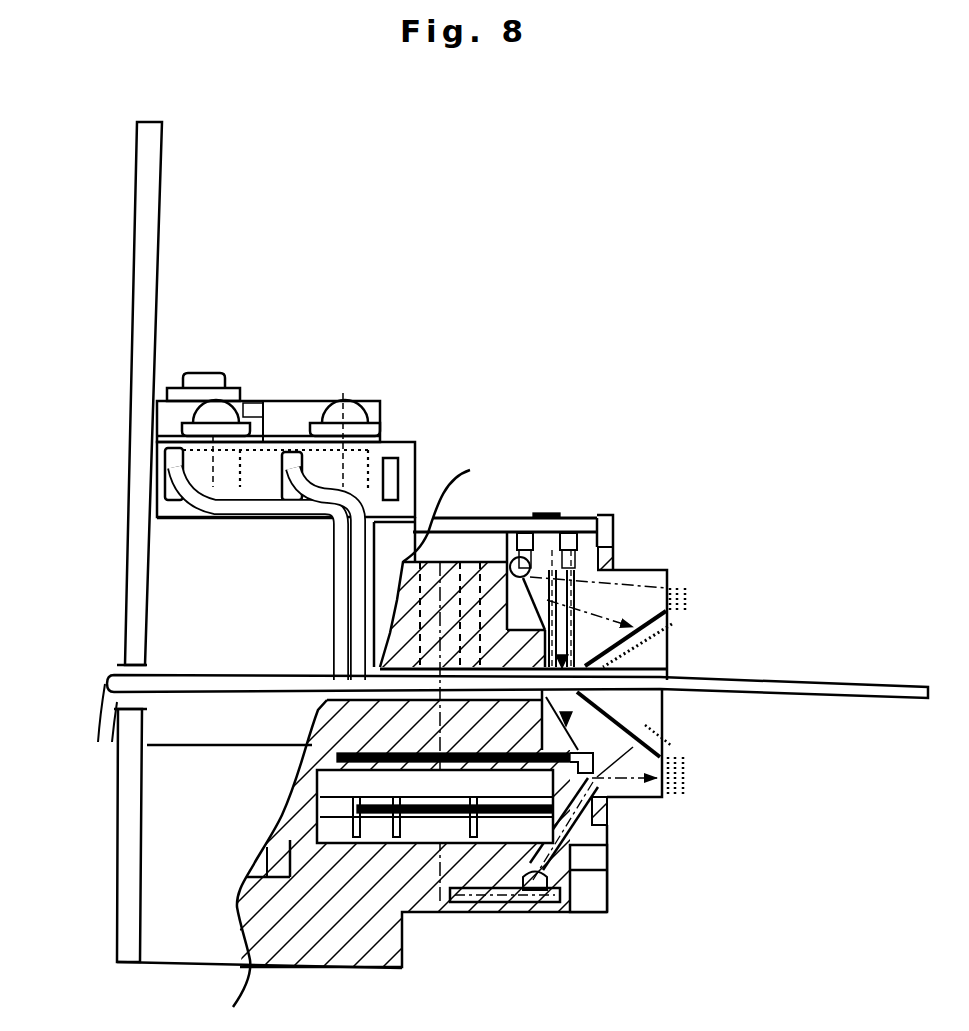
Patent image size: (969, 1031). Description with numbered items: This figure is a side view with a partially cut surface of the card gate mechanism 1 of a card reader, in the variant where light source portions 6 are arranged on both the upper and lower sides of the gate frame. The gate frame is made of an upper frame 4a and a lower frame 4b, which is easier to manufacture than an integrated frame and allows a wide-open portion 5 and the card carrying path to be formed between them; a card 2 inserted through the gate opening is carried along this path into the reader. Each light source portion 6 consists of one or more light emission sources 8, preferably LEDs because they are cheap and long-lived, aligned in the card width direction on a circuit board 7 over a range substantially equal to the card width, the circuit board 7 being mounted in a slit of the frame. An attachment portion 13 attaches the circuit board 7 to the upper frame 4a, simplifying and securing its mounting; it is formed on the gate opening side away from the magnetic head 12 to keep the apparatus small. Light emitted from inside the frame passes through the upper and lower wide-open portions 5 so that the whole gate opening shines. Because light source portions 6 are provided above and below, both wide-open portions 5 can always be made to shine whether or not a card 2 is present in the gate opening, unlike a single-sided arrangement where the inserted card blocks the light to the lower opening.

The card gate mechanism 1 is at (81, 208).
The card 2 is at (912, 700).
The upper frame 4a is at (637, 581).
The lower frame 4b is at (632, 793).
The wide-open portion 5 is at (700, 600).
The light source portion 6 is at (527, 712).
The circuit board 7 is at (545, 513).
The light emission source 8 is at (603, 446).
The magnetic head 12 is at (384, 745).
The attachment portion 13 is at (605, 517).